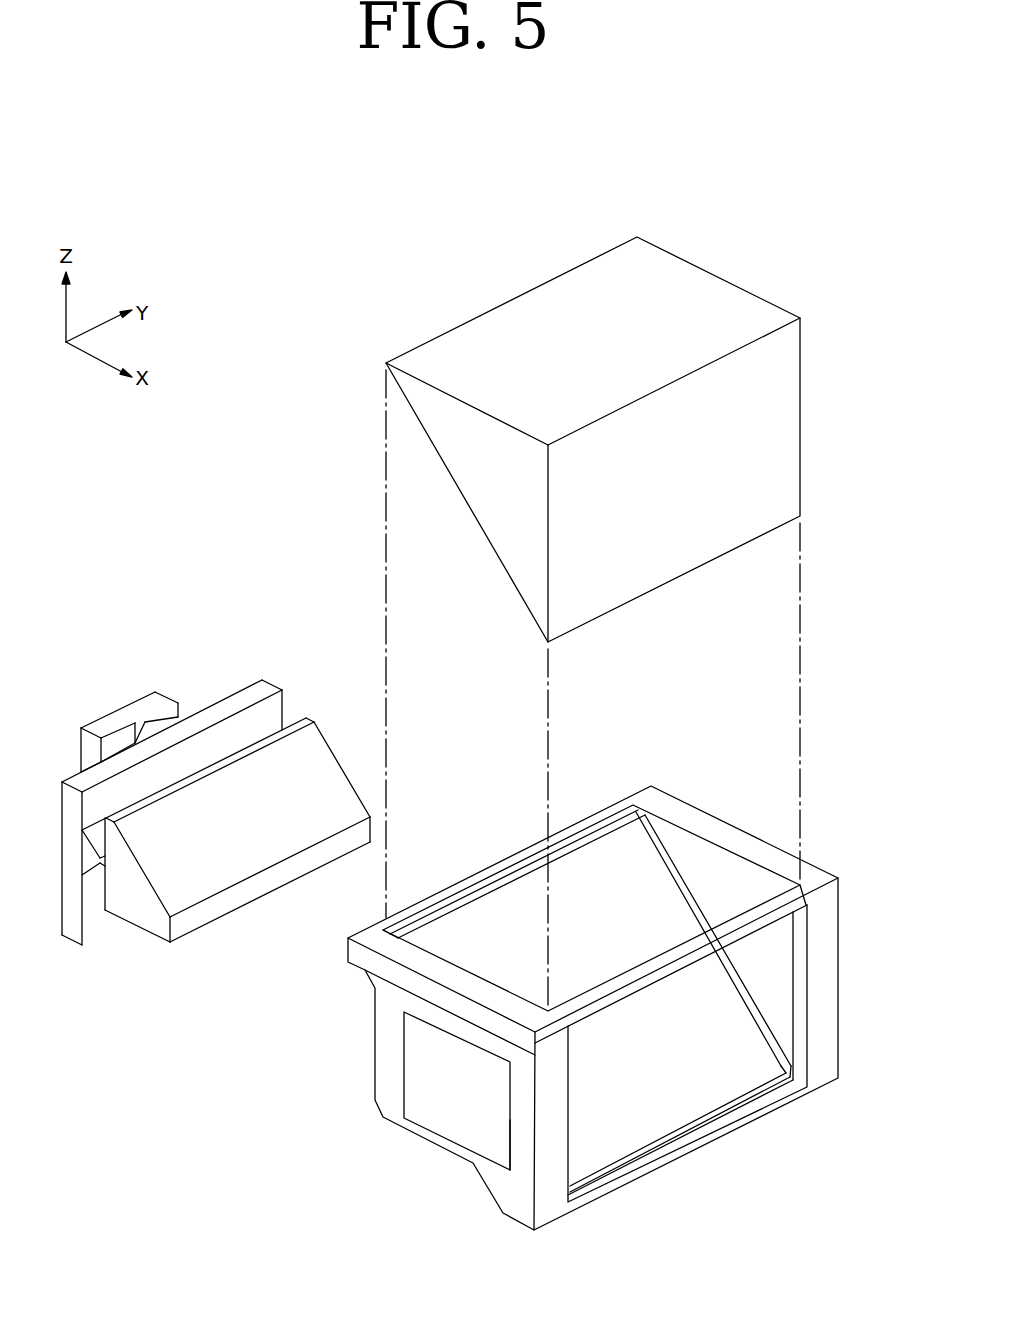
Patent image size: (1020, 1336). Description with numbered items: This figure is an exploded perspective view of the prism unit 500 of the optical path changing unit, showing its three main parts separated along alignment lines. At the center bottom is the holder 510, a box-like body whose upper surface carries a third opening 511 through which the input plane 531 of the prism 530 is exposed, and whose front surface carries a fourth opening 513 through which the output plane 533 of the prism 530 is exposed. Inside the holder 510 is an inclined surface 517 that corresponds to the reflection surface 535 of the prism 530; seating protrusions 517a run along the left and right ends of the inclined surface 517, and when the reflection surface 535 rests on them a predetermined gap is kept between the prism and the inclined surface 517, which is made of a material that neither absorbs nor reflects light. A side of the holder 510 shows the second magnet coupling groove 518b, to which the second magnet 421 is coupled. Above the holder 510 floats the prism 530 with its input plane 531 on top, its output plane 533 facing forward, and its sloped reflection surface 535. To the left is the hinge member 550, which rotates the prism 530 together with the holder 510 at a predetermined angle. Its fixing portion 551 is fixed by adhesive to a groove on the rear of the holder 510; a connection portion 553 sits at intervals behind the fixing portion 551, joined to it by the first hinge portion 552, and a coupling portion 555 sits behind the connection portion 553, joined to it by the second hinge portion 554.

The prism unit 500 is at (472, 132).
The holder 510 is at (640, 1006).
The third opening 511 is at (720, 860).
The fourth opening 513 is at (783, 996).
The inclined surface 517 is at (668, 1095).
The seating protrusion 517a is at (772, 1040).
The second magnet 421 is at (438, 1118).
The second magnet coupling groove 518b is at (507, 1133).
The prism 530 is at (602, 423).
The input plane 531 is at (690, 278).
The output plane 533 is at (788, 403).
The reflection surface 535 is at (435, 452).
The hinge member 550 is at (192, 816).
The fixing portion 551 is at (150, 920).
The first hinge portion 552 is at (97, 868).
The connection portion 553 is at (70, 915).
The second hinge portion 554 is at (142, 722).
The coupling portion 555 is at (109, 717).